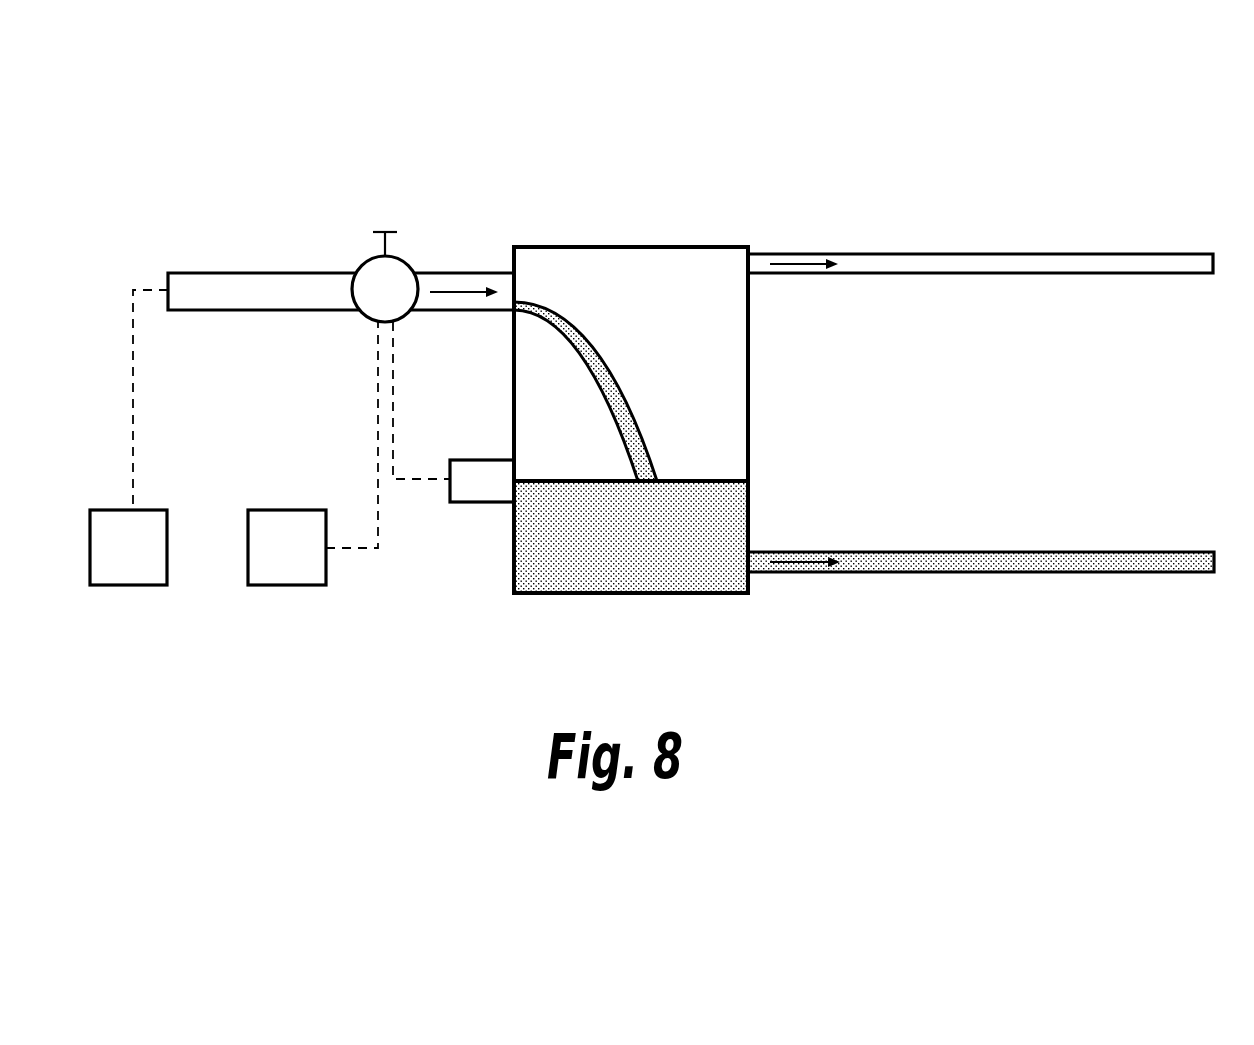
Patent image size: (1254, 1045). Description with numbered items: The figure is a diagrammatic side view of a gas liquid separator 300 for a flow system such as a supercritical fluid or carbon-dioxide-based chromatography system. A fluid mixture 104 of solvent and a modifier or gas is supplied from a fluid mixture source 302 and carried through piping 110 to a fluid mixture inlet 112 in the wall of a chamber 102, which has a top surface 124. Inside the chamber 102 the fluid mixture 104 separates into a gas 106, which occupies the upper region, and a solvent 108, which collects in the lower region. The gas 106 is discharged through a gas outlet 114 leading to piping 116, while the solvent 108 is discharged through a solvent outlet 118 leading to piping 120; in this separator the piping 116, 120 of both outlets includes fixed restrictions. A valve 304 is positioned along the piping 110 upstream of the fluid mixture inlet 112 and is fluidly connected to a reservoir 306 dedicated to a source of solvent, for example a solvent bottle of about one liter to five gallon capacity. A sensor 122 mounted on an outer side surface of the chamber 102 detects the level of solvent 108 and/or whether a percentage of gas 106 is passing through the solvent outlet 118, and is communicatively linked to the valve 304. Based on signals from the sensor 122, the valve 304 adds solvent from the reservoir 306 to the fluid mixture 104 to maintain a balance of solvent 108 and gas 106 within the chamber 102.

The gas liquid separator 300 is at (732, 150).
The chamber 102 is at (749, 383).
The fluid mixture 104 is at (197, 295).
The gas 106 is at (588, 278).
The solvent 108 is at (700, 487).
The piping 110 is at (288, 275).
The fluid mixture inlet 112 is at (515, 282).
The gas outlet 114 is at (749, 263).
The piping 116 is at (993, 254).
The solvent outlet 118 is at (749, 552).
The piping 120 is at (922, 552).
The sensor 122 is at (485, 460).
The top surface 124 is at (685, 247).
The fluid mixture source 302 is at (152, 510).
The valve 304 is at (402, 257).
The reservoir 306 is at (283, 510).